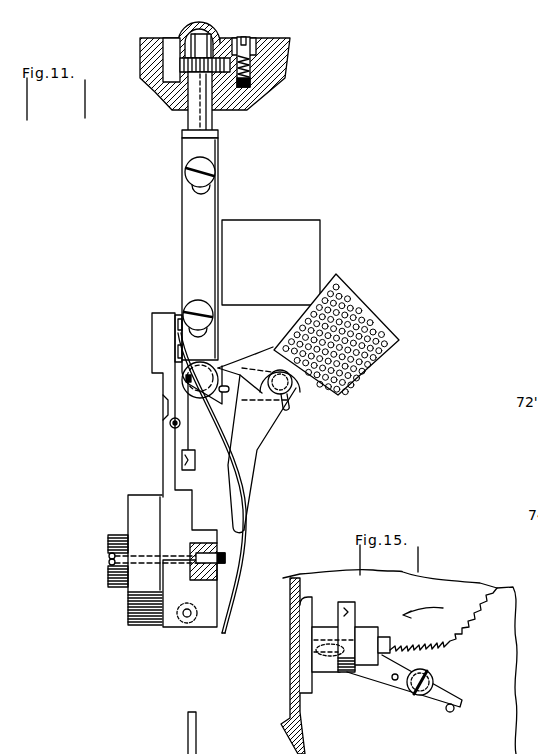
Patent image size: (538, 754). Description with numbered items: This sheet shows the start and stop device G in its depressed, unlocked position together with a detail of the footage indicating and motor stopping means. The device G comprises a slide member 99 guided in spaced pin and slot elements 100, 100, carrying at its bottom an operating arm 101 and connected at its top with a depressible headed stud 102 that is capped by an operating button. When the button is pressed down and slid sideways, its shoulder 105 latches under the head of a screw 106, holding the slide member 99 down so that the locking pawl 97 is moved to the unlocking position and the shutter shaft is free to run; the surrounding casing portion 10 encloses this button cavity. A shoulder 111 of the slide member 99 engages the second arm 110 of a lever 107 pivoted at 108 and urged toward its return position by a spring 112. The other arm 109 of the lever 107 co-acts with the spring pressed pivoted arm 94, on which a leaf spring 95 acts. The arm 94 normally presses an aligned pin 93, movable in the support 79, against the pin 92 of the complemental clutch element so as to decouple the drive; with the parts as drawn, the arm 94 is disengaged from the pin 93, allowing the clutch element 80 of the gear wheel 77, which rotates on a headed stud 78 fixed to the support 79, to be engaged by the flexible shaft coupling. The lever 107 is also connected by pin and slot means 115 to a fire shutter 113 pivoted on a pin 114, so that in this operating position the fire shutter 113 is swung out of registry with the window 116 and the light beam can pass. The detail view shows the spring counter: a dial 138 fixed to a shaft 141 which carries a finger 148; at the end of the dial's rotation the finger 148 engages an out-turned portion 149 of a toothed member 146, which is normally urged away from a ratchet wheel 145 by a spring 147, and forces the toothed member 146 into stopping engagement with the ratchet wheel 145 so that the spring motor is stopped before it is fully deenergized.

In FIG. 11, the housing 10 is at (275, 62).
In FIG. 11, the shoulder 105 is at (199, 23).
In FIG. 11, the screw 106 is at (263, 47).
In FIG. 11, the headed stud 102 is at (197, 118).
In FIG. 11, the slide member 99 is at (192, 226).
In FIG. 11, the pin and slot elements 100 is at (188, 190).
In FIG. 11, the start and stop device G is at (230, 195).
In FIG. 11, the window 116 is at (272, 220).
In FIG. 11, the fire shutter 113 is at (358, 311).
In FIG. 11, the shoulder 111 is at (177, 341).
In FIG. 11, the operating arm 101 is at (172, 430).
In FIG. 11, the second arm 110 is at (227, 378).
In FIG. 11, the pin 114 is at (186, 385).
In FIG. 11, the pin and slot means 115 is at (224, 393).
In FIG. 11, the pivot 108 is at (281, 395).
In FIG. 11, the spring 112 is at (289, 404).
In FIG. 11, the lever 107 is at (268, 425).
In FIG. 11, the arm 109 is at (232, 510).
In FIG. 11, the leaf spring 95 is at (236, 457).
In FIG. 11, the pivoted arm 94 is at (236, 560).
In FIG. 11, the locking pawl 97 is at (188, 471).
In FIG. 11, the support 79 is at (140, 500).
In FIG. 11, the gear wheel 77 is at (112, 535).
In FIG. 11, the clutch element 80 is at (109, 570).
In FIG. 11, the headed stud 78 is at (110, 555).
In FIG. 11, the pin 92 is at (110, 558).
In FIG. 11, the aligned pin 93 is at (205, 572).
In FIG. 15, the dial 138 is at (308, 627).
In FIG. 15, the finger 148 is at (346, 602).
In FIG. 15, the out-turned portion 149 is at (360, 625).
In FIG. 15, the shaft 141 is at (390, 645).
In FIG. 15, the ratchet wheel 145 is at (452, 628).
In FIG. 15, the toothed member 146 is at (372, 672).
In FIG. 15, the spring 147 is at (425, 697).